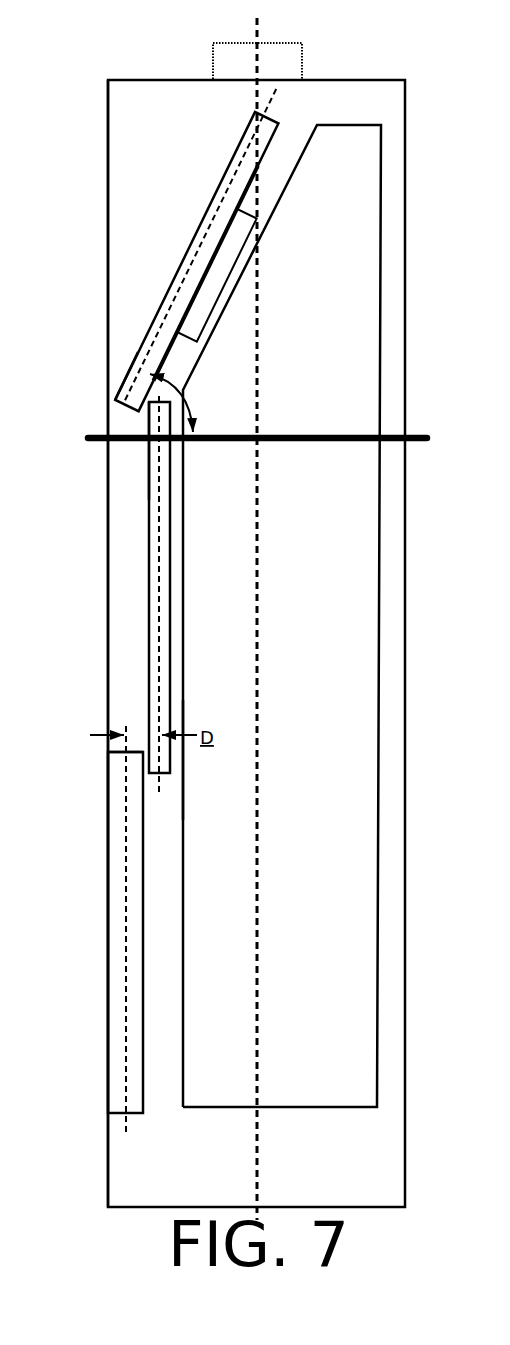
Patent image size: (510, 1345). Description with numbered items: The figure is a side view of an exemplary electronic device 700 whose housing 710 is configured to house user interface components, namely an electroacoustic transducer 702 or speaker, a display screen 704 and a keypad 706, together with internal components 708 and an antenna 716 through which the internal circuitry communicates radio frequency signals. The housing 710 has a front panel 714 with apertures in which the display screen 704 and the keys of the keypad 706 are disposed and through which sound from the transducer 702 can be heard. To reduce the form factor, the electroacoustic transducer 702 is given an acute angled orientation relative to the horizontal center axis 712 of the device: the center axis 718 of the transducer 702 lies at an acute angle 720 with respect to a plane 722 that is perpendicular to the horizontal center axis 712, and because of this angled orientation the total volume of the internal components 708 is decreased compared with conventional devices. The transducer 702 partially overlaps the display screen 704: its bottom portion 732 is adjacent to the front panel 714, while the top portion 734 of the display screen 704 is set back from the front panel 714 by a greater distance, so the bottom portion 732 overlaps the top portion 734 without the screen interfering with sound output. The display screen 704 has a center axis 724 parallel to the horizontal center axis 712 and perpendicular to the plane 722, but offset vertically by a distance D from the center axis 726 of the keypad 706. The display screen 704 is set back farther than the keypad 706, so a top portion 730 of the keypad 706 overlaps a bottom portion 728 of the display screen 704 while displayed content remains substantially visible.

The electronic device 700 is at (282, 601).
The electroacoustic transducer 702 is at (206, 266).
The display screen 704 is at (158, 587).
The keypad 706 is at (125, 932).
The internal components 708 is at (284, 616).
The housing 710 is at (160, 80).
The horizontal center axis 712 is at (263, 37).
The front panel 714 is at (107, 127).
The antenna 716 is at (257, 61).
The center axis of the electroacoustic transducer 718 is at (236, 167).
The acute angle 720 is at (188, 403).
The plane 722 is at (318, 436).
The center axis of the display screen 724 is at (161, 473).
The center axis of the keypad 726 is at (128, 815).
The bottom portion of the display screen 728 is at (181, 762).
The top portion of the keypad 730 is at (100, 760).
The bottom portion of the electroacoustic transducer 732 is at (114, 388).
The top portion of the display screen 734 is at (143, 424).